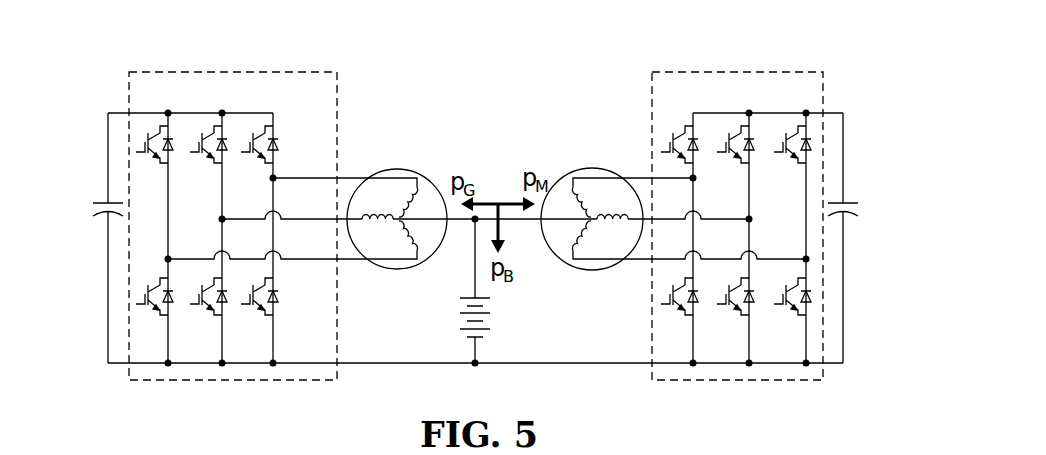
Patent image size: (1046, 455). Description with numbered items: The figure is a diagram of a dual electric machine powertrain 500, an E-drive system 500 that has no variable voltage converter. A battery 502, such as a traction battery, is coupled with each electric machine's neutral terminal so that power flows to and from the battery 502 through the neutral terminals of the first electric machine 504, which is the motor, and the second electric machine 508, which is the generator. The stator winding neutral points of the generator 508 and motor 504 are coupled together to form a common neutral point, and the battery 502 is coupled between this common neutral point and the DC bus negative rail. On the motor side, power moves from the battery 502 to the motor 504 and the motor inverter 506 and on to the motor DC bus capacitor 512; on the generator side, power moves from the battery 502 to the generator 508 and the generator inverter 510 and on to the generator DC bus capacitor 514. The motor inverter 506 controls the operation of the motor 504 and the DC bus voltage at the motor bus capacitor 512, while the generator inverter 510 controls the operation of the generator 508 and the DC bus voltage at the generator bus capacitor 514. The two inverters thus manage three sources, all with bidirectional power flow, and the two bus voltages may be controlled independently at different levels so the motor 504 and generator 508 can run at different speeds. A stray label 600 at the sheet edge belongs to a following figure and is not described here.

The dual electric machine powertrain 500 is at (812, 52).
The battery 502 is at (464, 333).
The first electric machine 504 is at (563, 175).
The motor inverter 506 is at (745, 71).
The second electric machine 508 is at (424, 175).
The generator inverter 510 is at (232, 71).
The motor DC bus capacitor 512 is at (849, 200).
The generator DC bus capacitor 514 is at (101, 200).
The system of FIG. 6 (partial label) 600 is at (790, 454).